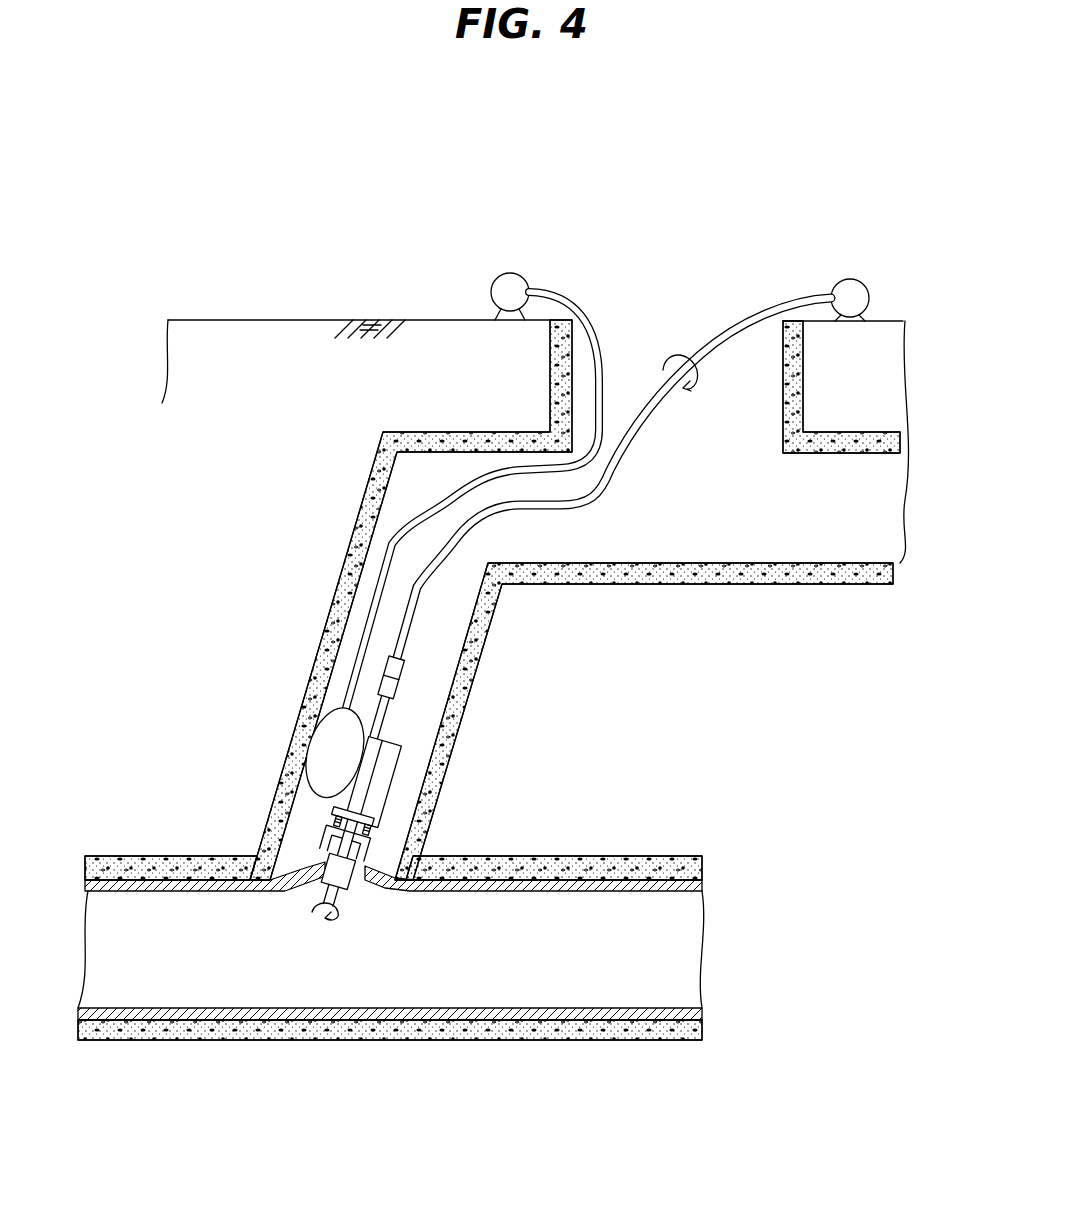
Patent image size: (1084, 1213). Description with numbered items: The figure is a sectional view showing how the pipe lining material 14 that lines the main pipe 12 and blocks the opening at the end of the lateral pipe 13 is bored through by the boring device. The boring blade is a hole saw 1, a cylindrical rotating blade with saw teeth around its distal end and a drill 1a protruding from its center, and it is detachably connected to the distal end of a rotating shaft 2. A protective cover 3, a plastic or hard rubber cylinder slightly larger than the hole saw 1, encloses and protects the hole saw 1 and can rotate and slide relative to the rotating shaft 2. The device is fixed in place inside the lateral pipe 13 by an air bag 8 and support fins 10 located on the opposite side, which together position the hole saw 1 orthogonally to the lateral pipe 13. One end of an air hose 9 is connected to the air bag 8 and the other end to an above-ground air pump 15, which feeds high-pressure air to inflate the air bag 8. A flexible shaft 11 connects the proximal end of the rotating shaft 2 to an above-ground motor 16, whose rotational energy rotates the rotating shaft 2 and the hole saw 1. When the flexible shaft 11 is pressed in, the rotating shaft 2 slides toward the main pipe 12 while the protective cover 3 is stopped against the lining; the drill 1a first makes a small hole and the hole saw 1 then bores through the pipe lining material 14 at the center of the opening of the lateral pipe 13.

The boring blade 1 is at (350, 890).
The drill 1a is at (328, 890).
The rotating shaft 2 is at (387, 708).
The protective cover 3 is at (307, 838).
The air bag 8 is at (325, 722).
The air hose 9 is at (403, 537).
The support fins 10 is at (388, 760).
The flexible shaft 11 is at (428, 592).
The main pipe 12 is at (647, 860).
The lateral pipe 13 is at (472, 672).
The pipe lining material 14 is at (572, 886).
The air pump 15 is at (514, 272).
The motor 16 is at (852, 279).